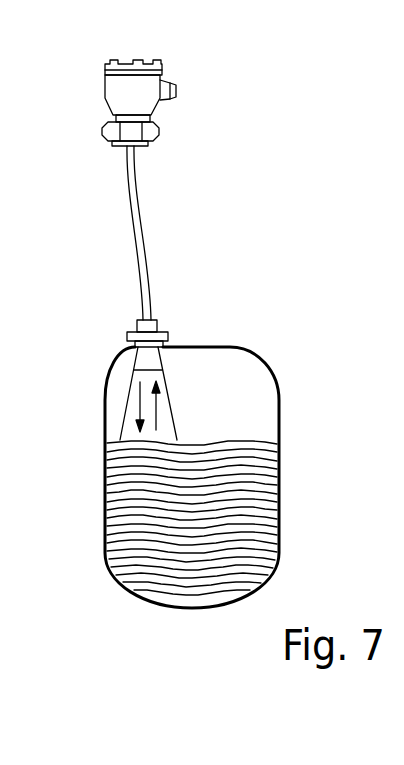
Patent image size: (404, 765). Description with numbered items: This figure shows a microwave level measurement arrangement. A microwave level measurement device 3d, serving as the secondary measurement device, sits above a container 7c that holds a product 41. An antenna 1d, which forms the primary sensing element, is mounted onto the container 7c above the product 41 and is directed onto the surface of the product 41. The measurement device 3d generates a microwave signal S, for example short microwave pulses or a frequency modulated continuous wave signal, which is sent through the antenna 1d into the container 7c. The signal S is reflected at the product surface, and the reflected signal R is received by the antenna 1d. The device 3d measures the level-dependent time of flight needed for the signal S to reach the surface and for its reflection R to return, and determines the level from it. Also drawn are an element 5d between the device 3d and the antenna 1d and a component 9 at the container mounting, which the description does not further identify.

The microwave level measurement device 3d is at (105, 95).
The cable 5d is at (130, 225).
The process connection flange 9 is at (127, 335).
The antenna 1d is at (147, 358).
The microwave signal S is at (138, 395).
The reflected signal R is at (157, 418).
The container 7c is at (279, 413).
The product 41 is at (123, 523).